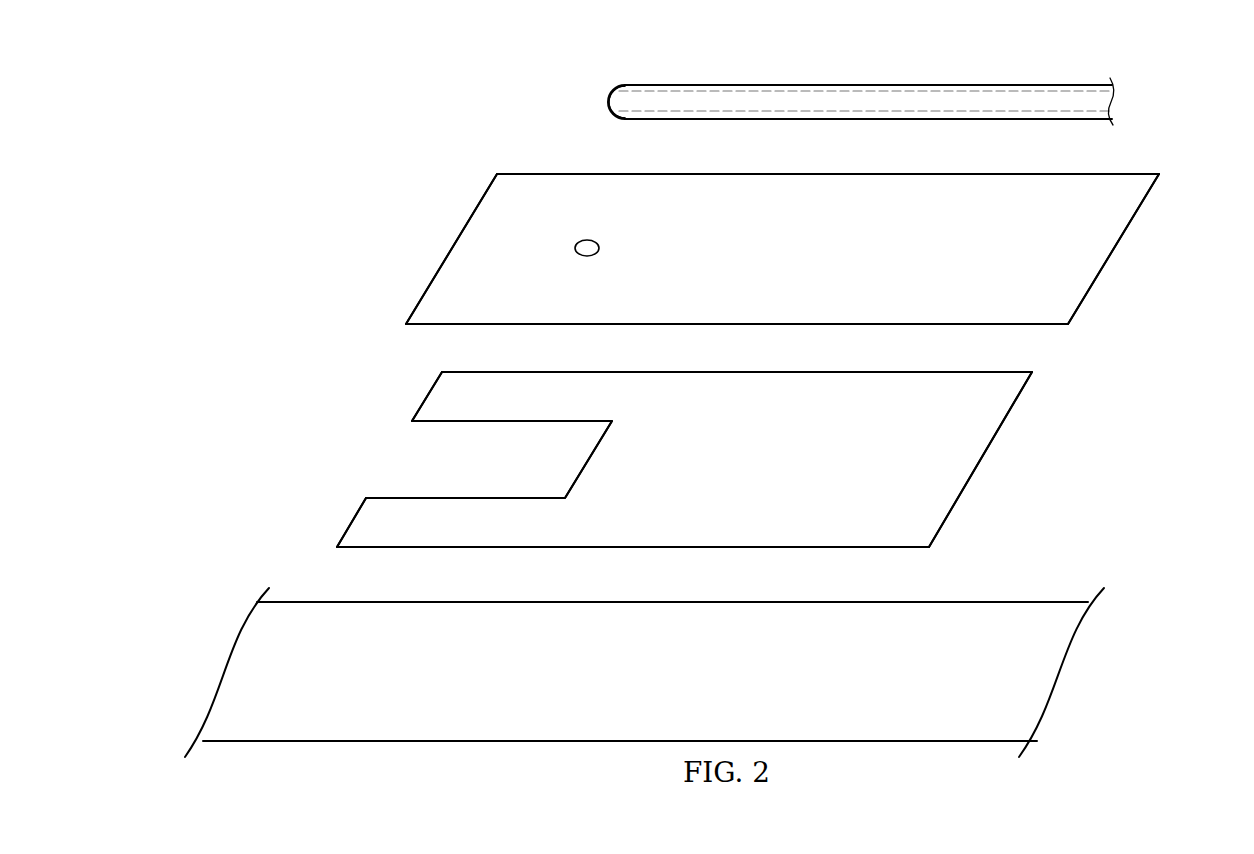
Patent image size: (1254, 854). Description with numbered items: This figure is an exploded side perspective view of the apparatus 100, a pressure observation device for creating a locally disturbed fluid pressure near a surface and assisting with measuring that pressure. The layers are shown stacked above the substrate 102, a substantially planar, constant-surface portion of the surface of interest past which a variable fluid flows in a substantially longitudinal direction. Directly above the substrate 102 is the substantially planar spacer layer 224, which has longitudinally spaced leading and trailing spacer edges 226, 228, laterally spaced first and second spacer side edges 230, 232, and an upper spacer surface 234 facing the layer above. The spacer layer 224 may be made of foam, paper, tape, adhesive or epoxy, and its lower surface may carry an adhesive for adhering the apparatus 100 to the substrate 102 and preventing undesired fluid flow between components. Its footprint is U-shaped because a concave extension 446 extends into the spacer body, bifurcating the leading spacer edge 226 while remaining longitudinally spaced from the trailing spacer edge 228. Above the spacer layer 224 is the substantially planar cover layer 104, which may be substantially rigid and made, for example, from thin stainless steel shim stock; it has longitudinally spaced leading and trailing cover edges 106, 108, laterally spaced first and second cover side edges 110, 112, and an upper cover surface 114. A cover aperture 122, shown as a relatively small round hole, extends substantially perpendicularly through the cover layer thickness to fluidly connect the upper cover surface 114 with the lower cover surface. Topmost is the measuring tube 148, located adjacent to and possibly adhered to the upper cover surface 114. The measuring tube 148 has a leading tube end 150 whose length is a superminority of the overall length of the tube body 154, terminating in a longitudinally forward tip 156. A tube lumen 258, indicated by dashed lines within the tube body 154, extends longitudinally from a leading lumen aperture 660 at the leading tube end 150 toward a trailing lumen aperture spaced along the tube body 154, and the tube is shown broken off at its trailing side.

The apparatus 100 is at (343, 271).
The substrate 102 is at (375, 681).
The cover layer 104 is at (815, 249).
The leading cover edge 106 is at (450, 252).
The trailing cover edge 108 is at (1108, 262).
The first cover side edge 110 is at (861, 173).
The second cover side edge 112 is at (1021, 325).
The upper cover surface 114 is at (978, 256).
The cover aperture 122 is at (600, 250).
The measuring tube 148 is at (882, 68).
The leading tube end 150 is at (856, 87).
The tube body 154 is at (965, 88).
The longitudinally forward tip 156 is at (612, 103).
The tube lumen 258 is at (1116, 101).
The leading lumen aperture 660 is at (601, 124).
The spacer layer 224 is at (696, 460).
The leading spacer edge 226 is at (424, 398).
The trailing spacer edge 228 is at (973, 478).
The first spacer side edge 230 is at (736, 372).
The second spacer side edge 232 is at (735, 548).
The upper spacer surface 234 is at (762, 467).
The concave extension 446 is at (503, 470).